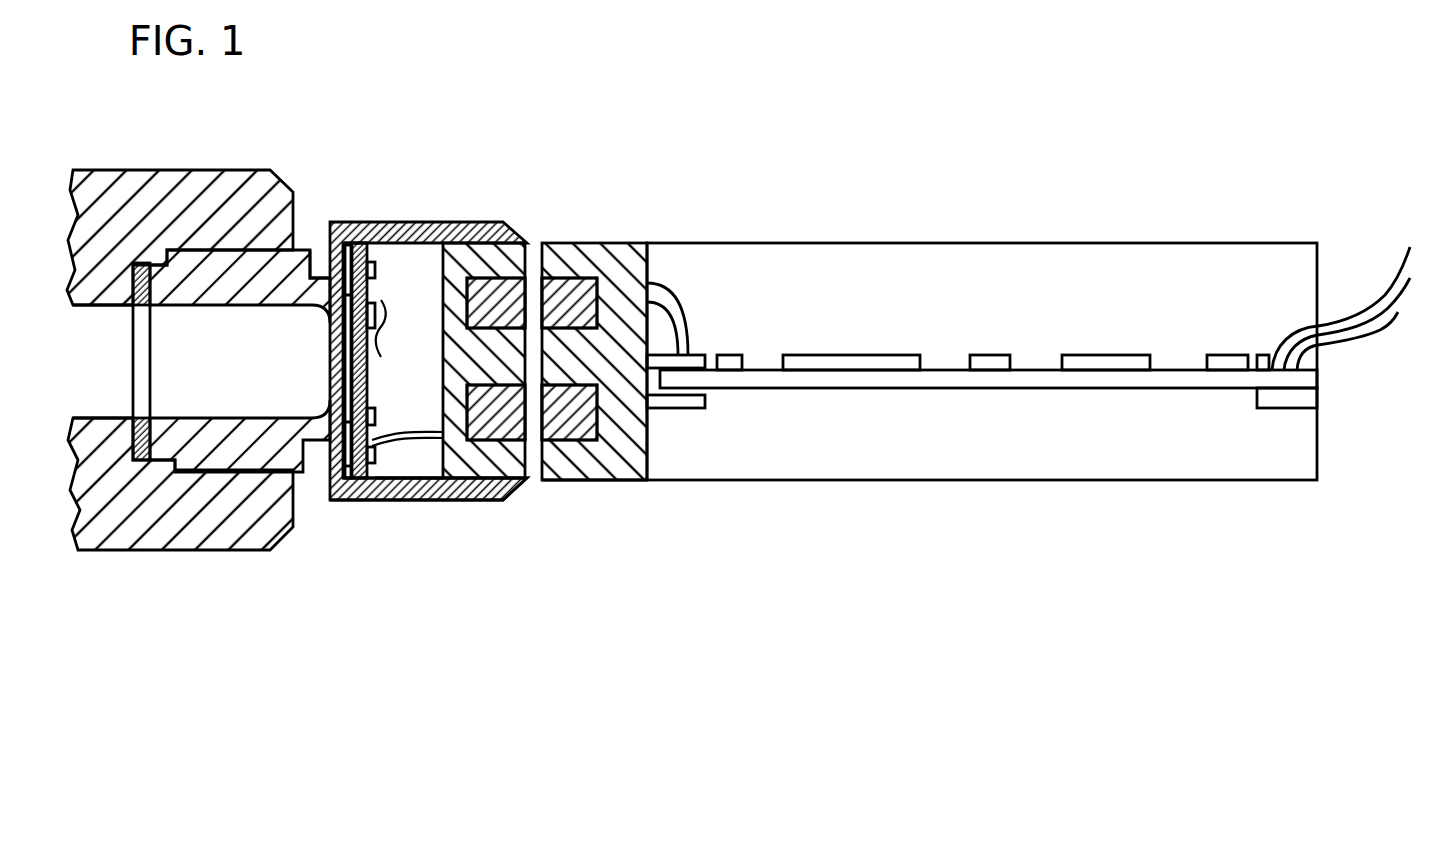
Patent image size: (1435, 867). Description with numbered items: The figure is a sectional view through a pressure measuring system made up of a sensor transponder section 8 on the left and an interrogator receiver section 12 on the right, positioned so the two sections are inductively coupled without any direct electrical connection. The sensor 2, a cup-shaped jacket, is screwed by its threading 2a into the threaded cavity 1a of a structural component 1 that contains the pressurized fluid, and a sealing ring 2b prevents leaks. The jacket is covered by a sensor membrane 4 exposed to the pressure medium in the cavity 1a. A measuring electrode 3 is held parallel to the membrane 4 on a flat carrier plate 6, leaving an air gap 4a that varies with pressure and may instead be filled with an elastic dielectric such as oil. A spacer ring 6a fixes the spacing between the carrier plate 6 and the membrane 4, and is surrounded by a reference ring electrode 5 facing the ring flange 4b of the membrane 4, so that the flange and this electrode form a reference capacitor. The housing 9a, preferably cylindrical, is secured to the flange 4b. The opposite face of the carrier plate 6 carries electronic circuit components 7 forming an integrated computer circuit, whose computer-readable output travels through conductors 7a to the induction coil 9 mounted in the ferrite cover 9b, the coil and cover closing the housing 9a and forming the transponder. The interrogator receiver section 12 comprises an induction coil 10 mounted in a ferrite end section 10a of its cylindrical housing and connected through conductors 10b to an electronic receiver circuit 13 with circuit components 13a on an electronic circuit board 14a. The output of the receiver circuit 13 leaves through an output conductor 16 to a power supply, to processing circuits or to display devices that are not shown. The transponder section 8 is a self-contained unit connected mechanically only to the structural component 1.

The structural component 1 is at (114, 520).
The threaded cavity 1a is at (102, 328).
The sensor 2 is at (189, 442).
The threading 2a is at (298, 252).
The sealing ring 2b is at (150, 304).
The measuring electrode 3 is at (350, 370).
The sensor membrane 4 is at (333, 343).
The air gap 4a is at (370, 298).
The ring flange 4b is at (352, 230).
The reference ring electrode 5 is at (349, 466).
The carrier plate 6 is at (369, 478).
The spacer ring 6a is at (330, 417).
The electronic circuit components 7 is at (380, 357).
The conductors 7a is at (417, 437).
The sensor transponder section 8 is at (420, 466).
The induction coil 9 is at (527, 478).
The housing 9a is at (478, 500).
The cover 9b is at (473, 258).
The induction coil 10 is at (580, 467).
The ferrite end section 10a is at (628, 460).
The conductors 10b is at (677, 300).
The interrogator receiver section 12 is at (765, 458).
The electronic receiver circuit 13 is at (847, 356).
The circuit components 13a is at (1090, 354).
The electronic circuit board 14a is at (955, 380).
The output conductor 16 is at (1343, 327).